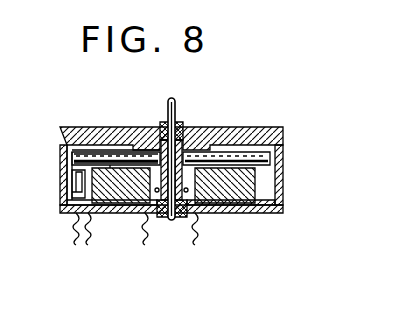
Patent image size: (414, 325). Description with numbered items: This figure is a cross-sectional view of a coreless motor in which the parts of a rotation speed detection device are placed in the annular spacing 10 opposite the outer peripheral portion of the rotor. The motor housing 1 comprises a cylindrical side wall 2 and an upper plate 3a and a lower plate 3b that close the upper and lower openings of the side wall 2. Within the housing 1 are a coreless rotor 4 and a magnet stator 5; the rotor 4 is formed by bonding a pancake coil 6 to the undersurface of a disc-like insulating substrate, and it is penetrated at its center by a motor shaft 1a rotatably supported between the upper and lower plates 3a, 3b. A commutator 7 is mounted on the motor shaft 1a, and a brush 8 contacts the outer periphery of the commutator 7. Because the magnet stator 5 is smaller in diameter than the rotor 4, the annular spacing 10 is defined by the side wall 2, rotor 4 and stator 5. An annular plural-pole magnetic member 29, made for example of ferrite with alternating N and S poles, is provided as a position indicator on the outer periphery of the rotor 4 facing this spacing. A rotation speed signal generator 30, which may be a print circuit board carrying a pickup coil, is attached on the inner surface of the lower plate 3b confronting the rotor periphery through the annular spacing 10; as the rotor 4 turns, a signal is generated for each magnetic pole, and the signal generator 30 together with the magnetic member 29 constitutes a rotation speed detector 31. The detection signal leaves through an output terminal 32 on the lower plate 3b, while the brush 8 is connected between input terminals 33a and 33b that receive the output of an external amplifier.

The motor housing 1 is at (186, 171).
The motor shaft 1a is at (175, 103).
The cylindrical side wall 2 is at (282, 188).
The upper plate 3a is at (253, 128).
The lower plate 3b is at (258, 214).
The coreless rotor 4 is at (83, 157).
The magnet stator 5 is at (110, 205).
The pancake coil 6 is at (113, 152).
The commutator 7 is at (150, 225).
The brush 8 is at (187, 213).
The annular spacing 10 is at (88, 152).
The annular plural-pole magnetic member 29 is at (67, 157).
The rotation speed signal generator 30 is at (73, 182).
The rotation speed detector 31 is at (72, 180).
The output terminal 32 is at (72, 236).
The input terminal 33a is at (148, 238).
The input terminal 33b is at (199, 233).